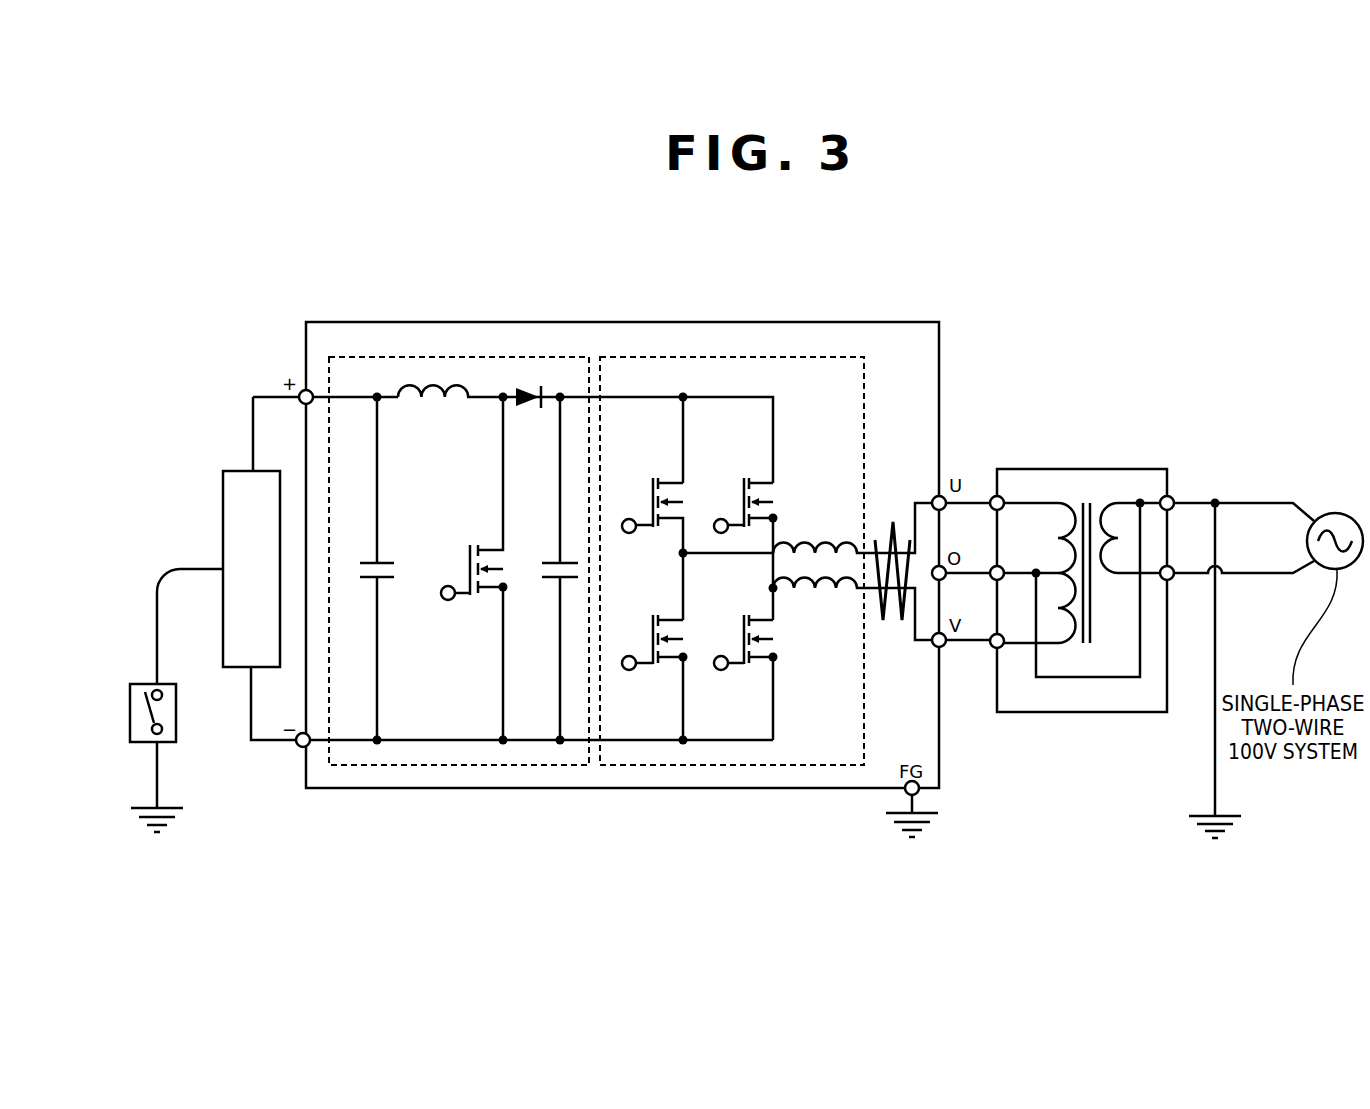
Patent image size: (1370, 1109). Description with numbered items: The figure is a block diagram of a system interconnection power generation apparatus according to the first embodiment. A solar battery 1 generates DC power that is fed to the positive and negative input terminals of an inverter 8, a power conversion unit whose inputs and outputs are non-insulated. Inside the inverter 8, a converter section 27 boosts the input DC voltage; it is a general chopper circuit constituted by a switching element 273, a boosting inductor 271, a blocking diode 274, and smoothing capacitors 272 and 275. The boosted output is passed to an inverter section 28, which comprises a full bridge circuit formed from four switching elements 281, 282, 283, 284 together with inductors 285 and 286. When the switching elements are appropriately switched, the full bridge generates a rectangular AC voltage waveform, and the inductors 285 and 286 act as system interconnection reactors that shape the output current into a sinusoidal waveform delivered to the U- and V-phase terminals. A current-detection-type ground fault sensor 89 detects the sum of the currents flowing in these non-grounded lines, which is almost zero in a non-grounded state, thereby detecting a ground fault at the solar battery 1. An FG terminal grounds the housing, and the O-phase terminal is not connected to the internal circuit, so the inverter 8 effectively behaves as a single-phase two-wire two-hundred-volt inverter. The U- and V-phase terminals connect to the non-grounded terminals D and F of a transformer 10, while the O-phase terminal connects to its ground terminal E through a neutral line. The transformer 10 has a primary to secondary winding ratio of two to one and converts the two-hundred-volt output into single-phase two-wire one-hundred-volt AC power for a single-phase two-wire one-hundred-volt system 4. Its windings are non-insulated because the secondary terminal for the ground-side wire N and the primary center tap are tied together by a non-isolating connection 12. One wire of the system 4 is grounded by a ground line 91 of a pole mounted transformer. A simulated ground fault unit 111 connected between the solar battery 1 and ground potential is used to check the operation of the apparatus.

The solar battery 1 is at (240, 470).
The single-phase two-wire 100-V system 4 is at (1338, 513).
The inverter 8 is at (616, 322).
The transformer 10 is at (1045, 469).
The non-isolating connection 12 is at (1058, 678).
The converter section 27 is at (446, 357).
The inverter section 28 is at (733, 357).
The ground fault sensor 89 is at (888, 540).
The ground line 91 is at (1212, 757).
The simulated ground fault unit 111 is at (177, 720).
The boosting inductor 271 is at (433, 400).
The smoothing capacitor 272 is at (384, 558).
The switching element 273 is at (458, 602).
The blocking diode 274 is at (527, 404).
The smoothing capacitor 275 is at (547, 590).
The switching element 281 is at (655, 476).
The switching element 282 is at (655, 613).
The switching element 283 is at (745, 476).
The switching element 284 is at (745, 614).
The inductor 285 is at (800, 548).
The inductor 286 is at (800, 593).